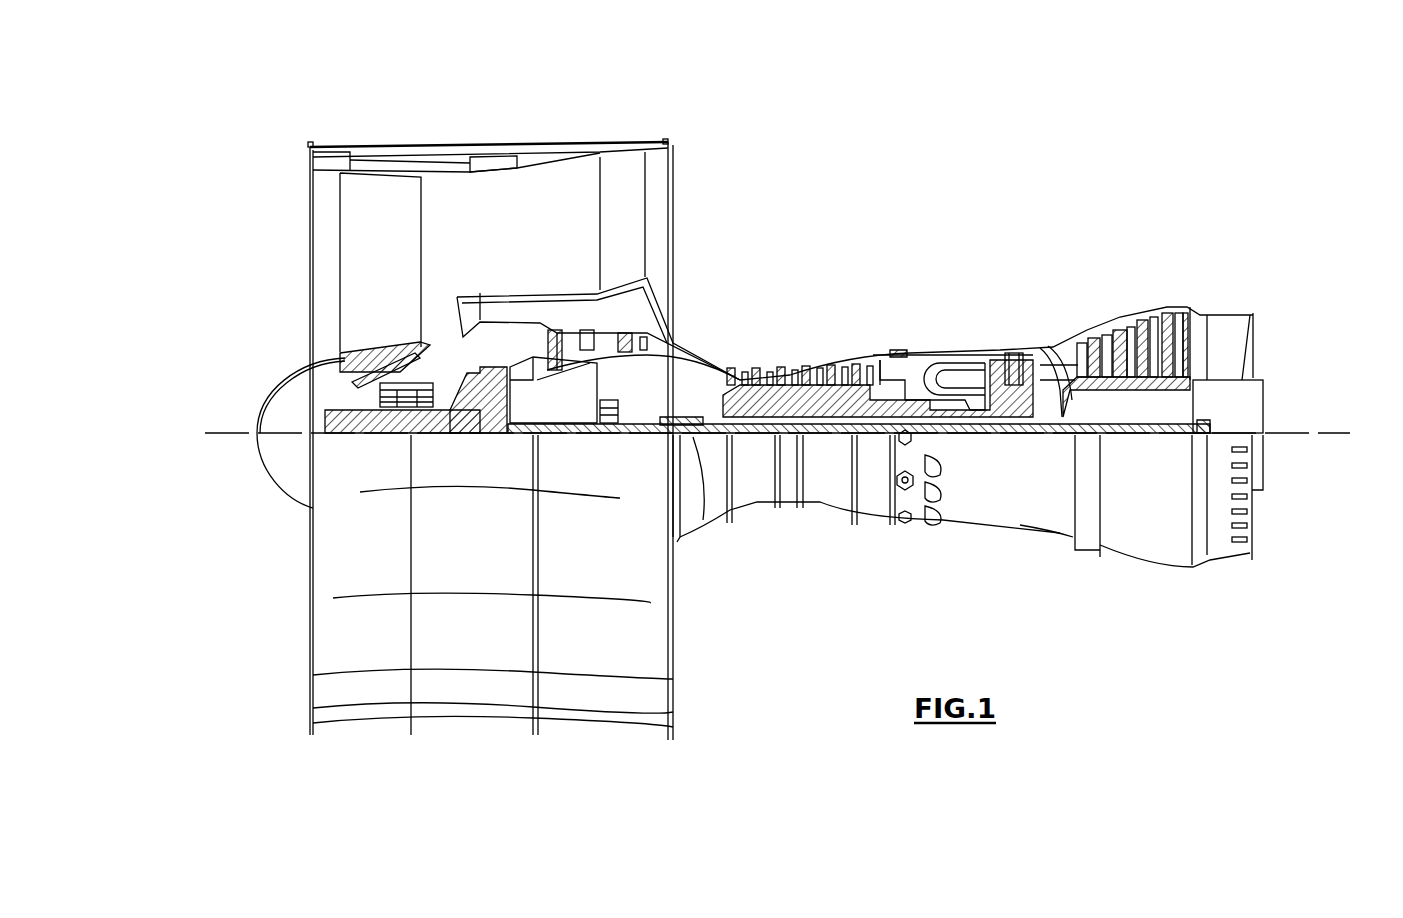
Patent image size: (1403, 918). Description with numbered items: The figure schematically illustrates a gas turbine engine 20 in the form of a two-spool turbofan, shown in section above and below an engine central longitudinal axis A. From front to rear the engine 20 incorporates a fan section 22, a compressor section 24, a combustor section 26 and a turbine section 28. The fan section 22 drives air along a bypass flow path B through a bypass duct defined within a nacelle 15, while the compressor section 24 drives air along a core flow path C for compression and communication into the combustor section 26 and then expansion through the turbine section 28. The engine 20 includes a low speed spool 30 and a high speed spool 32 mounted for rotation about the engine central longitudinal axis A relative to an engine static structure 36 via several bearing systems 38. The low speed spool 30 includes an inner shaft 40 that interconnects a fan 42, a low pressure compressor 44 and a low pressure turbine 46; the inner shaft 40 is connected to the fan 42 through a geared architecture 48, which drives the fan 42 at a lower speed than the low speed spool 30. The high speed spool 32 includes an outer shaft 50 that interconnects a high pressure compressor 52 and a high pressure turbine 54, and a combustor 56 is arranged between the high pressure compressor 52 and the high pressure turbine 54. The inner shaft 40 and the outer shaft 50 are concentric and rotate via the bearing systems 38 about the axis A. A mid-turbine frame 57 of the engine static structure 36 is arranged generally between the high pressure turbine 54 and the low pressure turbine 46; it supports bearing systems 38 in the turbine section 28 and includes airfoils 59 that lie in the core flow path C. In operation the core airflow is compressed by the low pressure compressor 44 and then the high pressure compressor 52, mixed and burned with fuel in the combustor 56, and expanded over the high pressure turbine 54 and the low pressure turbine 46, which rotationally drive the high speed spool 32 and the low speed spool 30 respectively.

The nacelle 15 is at (495, 155).
The gas turbine engine 20 is at (961, 206).
The fan section 22 is at (418, 138).
The compressor section 24 is at (728, 338).
The combustor section 26 is at (944, 322).
The turbine section 28 is at (1100, 285).
The low speed spool 30 is at (831, 452).
The high speed spool 32 is at (870, 368).
The engine static structure 36 is at (871, 515).
The bearing systems 38 is at (632, 420).
The inner shaft 40 is at (690, 520).
The fan 42 is at (362, 278).
The low pressure compressor 44 is at (590, 342).
The low pressure turbine 46 is at (1137, 340).
The geared architecture 48 is at (498, 415).
The outer shaft 50 is at (950, 420).
The high pressure compressor 52 is at (795, 400).
The high pressure turbine 54 is at (1012, 350).
The combustor 56 is at (945, 375).
The mid-turbine frame 57 is at (1052, 338).
The airfoils 59 is at (1080, 400).
The engine central longitudinal axis A is at (1350, 433).
The bypass flow path B is at (445, 225).
The core flow path C is at (485, 328).